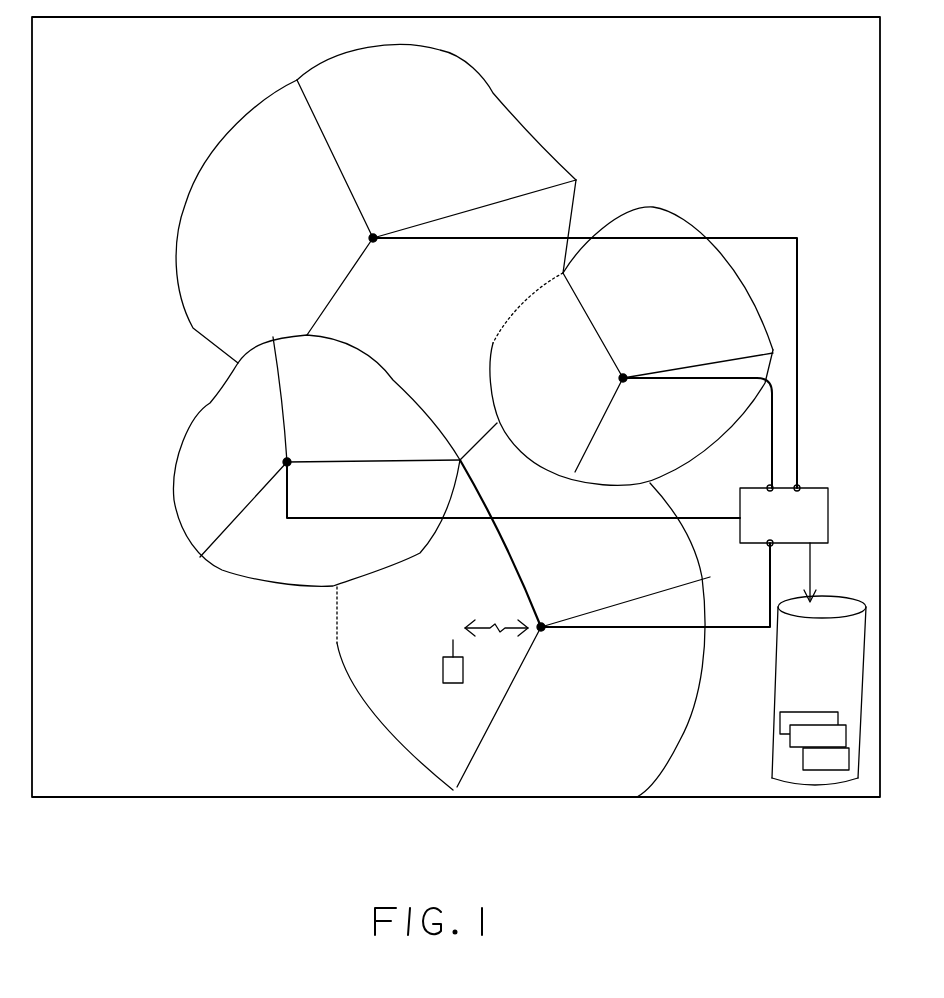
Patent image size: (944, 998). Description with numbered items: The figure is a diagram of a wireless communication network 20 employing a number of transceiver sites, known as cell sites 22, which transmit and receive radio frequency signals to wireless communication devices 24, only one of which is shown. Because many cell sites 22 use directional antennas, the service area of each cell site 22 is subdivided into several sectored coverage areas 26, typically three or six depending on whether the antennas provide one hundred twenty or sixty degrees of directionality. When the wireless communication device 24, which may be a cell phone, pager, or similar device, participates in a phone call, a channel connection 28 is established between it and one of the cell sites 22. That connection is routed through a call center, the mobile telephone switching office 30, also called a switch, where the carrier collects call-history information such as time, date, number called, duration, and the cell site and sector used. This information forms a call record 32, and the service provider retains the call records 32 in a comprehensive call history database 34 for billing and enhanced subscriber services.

The wireless communication network 20 is at (745, 887).
The cell site 22 is at (371, 238).
The wireless communication device 24 is at (447, 664).
The sectored coverage area 26 is at (257, 148).
The channel connection 28 is at (505, 625).
The mobile telephone switching office (MTSO) 30 is at (825, 488).
The call record 32 is at (780, 743).
The call history database 34 is at (780, 698).